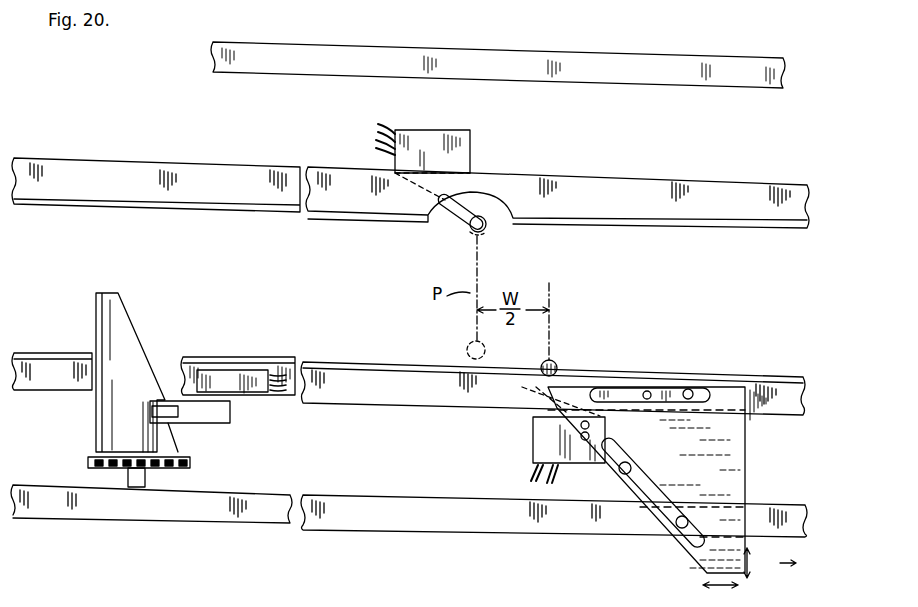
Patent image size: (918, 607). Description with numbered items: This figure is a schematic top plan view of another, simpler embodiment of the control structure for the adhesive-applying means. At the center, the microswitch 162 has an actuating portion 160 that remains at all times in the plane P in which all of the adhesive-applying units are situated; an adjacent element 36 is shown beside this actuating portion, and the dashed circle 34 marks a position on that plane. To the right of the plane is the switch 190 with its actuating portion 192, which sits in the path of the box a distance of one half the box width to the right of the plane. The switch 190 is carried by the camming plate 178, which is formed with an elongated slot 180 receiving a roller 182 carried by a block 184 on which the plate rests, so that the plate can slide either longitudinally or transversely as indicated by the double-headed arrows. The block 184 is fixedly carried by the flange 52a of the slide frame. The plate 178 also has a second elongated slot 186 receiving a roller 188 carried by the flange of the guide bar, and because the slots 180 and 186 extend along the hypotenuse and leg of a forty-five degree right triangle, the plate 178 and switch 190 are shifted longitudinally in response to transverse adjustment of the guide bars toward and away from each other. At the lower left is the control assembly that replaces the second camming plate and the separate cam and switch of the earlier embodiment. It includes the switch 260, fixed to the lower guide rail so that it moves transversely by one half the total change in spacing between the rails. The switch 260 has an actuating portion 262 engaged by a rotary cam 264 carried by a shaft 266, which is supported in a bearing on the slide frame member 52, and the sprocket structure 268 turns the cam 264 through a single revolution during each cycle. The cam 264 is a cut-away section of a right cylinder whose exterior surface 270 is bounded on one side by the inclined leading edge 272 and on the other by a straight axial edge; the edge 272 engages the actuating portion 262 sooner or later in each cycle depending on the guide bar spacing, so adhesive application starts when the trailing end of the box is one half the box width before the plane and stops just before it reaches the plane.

The flange 52a is at (460, 58).
The slide frame member 52 is at (264, 522).
The microswitch 162 is at (463, 149).
The pin 36 is at (458, 233).
The actuating portion 160 is at (490, 225).
The reference circle 34 is at (470, 337).
The actuating portion 192 is at (553, 365).
The exterior surface 270 is at (136, 390).
The inclined edge 272 is at (140, 338).
The rotary cam 264 is at (90, 316).
The actuating portion 262 is at (182, 423).
The sprocket structure 268 is at (88, 462).
The shaft 266 is at (146, 494).
The switch 260 is at (247, 378).
The camming plate 178 is at (690, 456).
The elongated slot 180 is at (622, 472).
The roller 182 is at (673, 532).
The block 184 is at (643, 526).
The elongated slot 186 is at (688, 388).
The roller 188 is at (647, 391).
The microswitch 190 is at (533, 442).